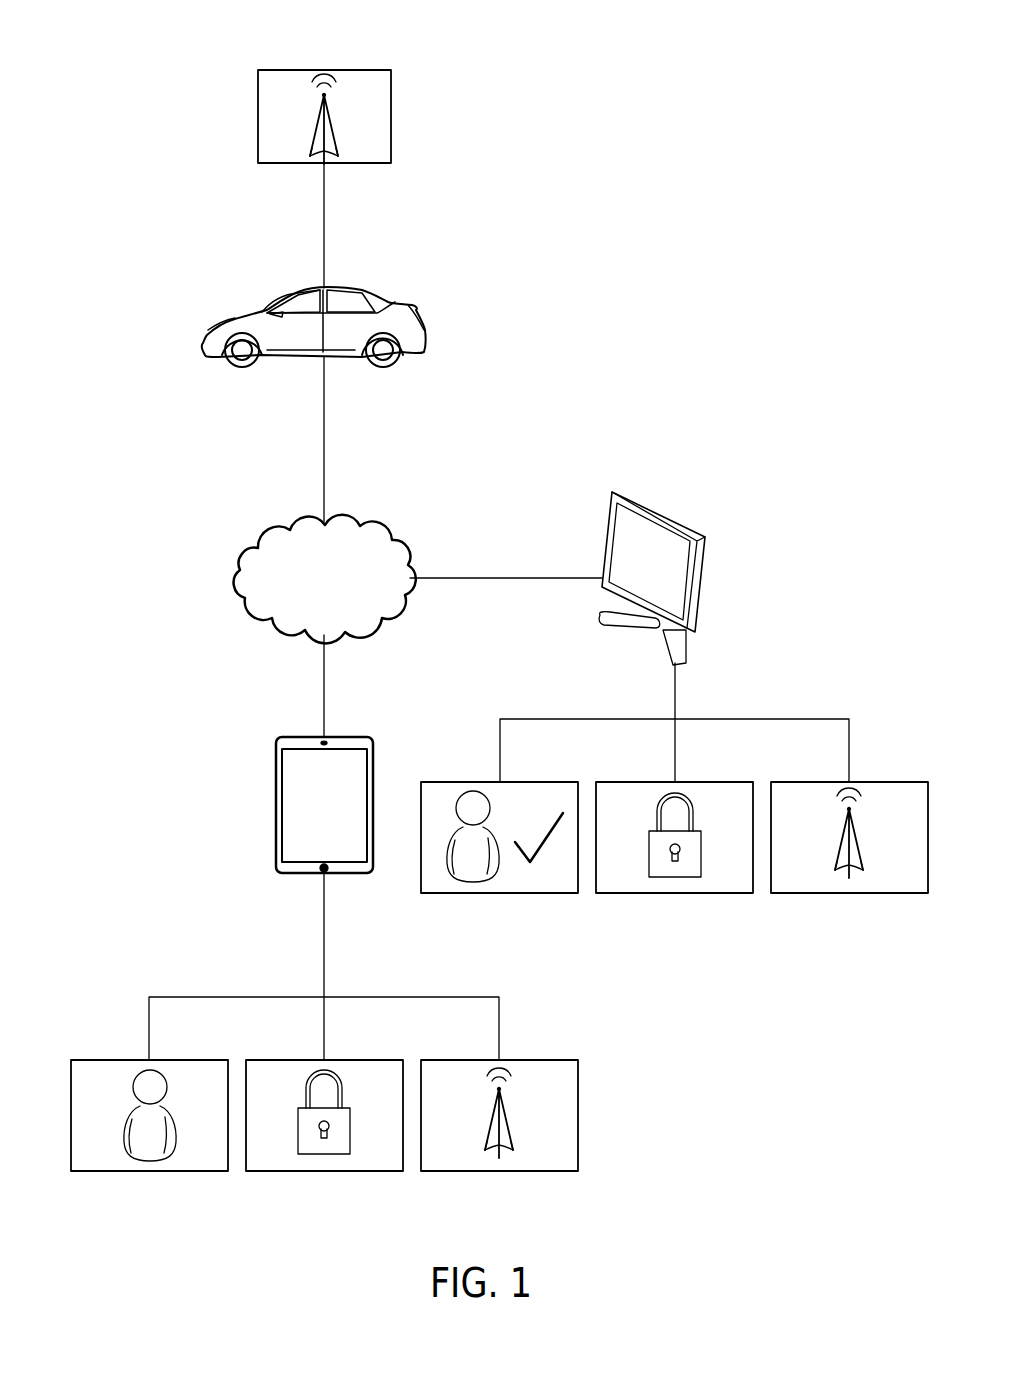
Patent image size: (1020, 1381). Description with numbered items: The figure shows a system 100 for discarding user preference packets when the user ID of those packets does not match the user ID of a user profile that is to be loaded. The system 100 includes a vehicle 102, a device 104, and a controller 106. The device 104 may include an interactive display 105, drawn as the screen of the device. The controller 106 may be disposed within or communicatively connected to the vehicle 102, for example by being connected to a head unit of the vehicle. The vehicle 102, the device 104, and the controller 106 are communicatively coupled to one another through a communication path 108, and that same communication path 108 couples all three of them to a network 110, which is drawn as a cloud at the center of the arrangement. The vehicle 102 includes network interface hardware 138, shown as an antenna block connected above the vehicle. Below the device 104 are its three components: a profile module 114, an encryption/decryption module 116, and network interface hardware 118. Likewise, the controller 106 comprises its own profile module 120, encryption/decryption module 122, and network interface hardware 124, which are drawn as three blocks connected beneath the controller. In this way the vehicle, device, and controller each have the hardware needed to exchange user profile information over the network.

The system 100 is at (797, 100).
The vehicle 102 is at (426, 338).
The device 104 is at (324, 898).
The interactive display 105 is at (358, 774).
The controller 106 is at (702, 588).
The communication path 108 is at (324, 477).
The network 110 is at (232, 611).
The profile module 114 is at (149, 1171).
The encryption/decryption module 116 is at (324, 1171).
The network interface hardware 118 is at (499, 1171).
The profile module 120 is at (500, 893).
The encryption/decryption module 122 is at (675, 893).
The network interface hardware 124 is at (849, 893).
The network interface hardware 138 is at (324, 70).